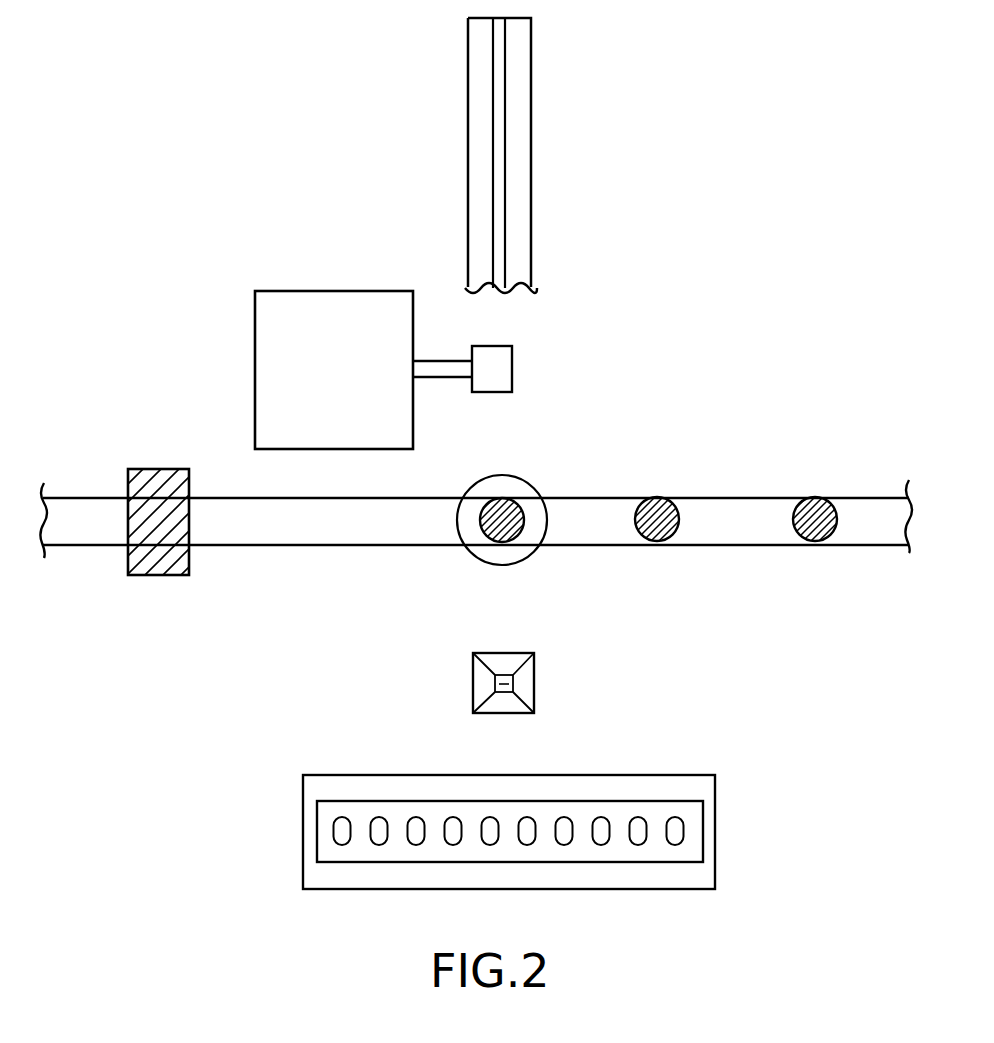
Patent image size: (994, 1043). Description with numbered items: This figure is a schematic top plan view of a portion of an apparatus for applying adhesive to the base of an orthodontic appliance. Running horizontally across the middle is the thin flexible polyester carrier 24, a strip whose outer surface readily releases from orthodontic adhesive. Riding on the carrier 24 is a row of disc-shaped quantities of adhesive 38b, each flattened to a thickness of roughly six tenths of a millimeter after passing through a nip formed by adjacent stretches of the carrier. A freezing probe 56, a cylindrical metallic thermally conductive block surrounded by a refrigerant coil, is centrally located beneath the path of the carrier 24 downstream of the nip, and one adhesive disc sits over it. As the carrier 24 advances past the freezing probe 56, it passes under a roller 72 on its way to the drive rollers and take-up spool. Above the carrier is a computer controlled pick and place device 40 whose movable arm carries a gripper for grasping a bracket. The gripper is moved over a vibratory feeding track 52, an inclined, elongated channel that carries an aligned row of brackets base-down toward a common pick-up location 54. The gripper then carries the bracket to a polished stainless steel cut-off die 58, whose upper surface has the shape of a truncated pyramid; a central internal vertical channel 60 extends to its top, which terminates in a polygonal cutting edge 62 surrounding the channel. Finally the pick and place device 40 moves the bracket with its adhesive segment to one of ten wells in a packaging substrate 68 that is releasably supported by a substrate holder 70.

The carrier 24 is at (333, 537).
The adhesive 38b is at (525, 510).
The pick and place device 40 is at (255, 336).
The vibratory feeding track 52 is at (518, 108).
The pick-up location 54 is at (507, 245).
The freezing probe 56 is at (527, 555).
The cut-off die 58 is at (536, 685).
The vertical channel 60 is at (497, 680).
The cutting edge 62 is at (505, 690).
The packaging substrate 68 is at (690, 810).
The substrate holder 70 is at (668, 876).
The roller 72 is at (175, 557).